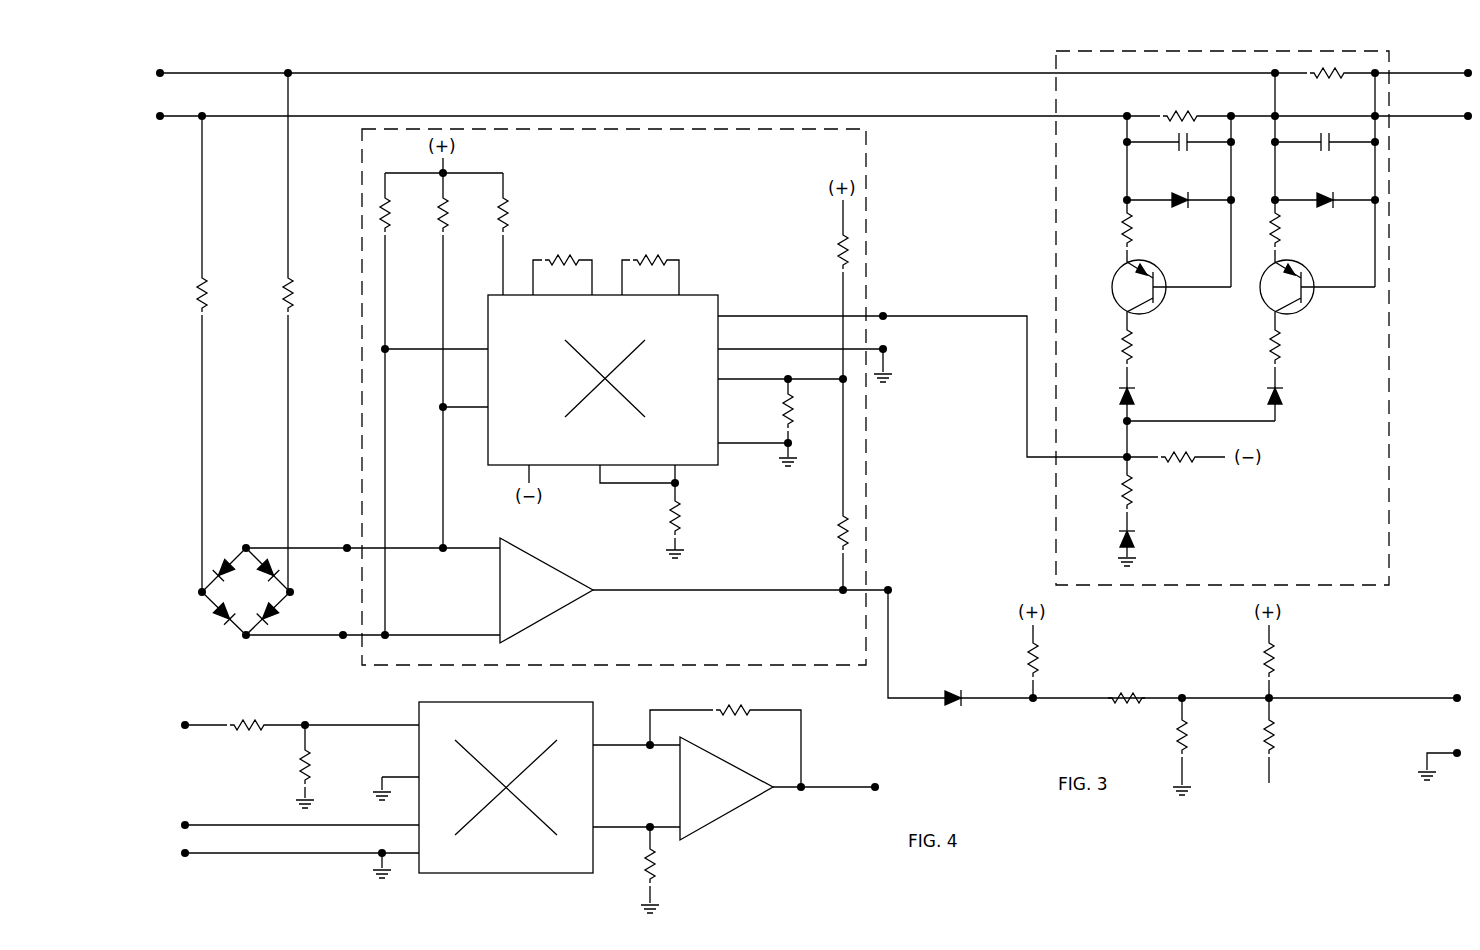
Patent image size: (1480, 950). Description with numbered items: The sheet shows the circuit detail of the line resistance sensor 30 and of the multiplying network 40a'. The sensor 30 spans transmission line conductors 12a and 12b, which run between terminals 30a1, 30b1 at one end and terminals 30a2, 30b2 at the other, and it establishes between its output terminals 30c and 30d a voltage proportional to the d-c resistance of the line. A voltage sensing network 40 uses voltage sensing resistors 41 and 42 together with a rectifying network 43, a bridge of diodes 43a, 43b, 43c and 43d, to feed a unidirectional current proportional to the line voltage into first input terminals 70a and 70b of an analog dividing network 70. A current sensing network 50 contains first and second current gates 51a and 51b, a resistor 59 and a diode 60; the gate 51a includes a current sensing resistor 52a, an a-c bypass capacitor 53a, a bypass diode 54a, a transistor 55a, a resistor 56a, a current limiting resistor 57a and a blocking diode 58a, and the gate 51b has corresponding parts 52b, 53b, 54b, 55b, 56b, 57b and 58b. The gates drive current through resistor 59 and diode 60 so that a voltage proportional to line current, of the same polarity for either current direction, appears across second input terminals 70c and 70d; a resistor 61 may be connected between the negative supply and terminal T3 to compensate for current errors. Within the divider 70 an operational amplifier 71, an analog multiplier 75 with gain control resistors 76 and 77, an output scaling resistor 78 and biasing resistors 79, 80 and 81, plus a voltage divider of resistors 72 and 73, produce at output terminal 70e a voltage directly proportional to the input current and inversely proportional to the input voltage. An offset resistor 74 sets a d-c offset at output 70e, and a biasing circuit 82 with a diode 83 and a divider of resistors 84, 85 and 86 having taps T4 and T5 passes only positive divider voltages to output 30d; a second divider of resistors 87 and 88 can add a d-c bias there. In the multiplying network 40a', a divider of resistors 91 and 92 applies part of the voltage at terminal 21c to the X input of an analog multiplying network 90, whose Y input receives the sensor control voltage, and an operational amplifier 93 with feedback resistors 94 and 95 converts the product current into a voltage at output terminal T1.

In FIG. 3, the conductor 12a is at (465, 75).
In FIG. 3, the conductor 12b is at (470, 113).
In FIG. 3, the terminal 30a1 is at (166, 73).
In FIG. 3, the terminal 30b1 is at (166, 116).
In FIG. 3, the terminal 30a2 is at (1465, 72).
In FIG. 3, the terminal 30b2 is at (1465, 114).
In FIG. 3, the line resistance sensor 30 is at (338, 175).
In FIG. 3, the voltage sensing network 40 is at (307, 268).
In FIG. 3, the voltage sensing resistor 41 is at (293, 305).
In FIG. 3, the voltage sensing resistor 42 is at (207, 305).
In FIG. 3, the rectifying network 43 is at (251, 554).
In FIG. 3, the diode 43a is at (220, 552).
In FIG. 3, the diode 43b is at (215, 620).
In FIG. 3, the diode 43c is at (272, 600).
In FIG. 3, the diode 43d is at (268, 596).
In FIG. 3, the analog dividing network 70 is at (868, 160).
In FIG. 3, the first input terminal 70a is at (346, 544).
In FIG. 3, the first input terminal 70b is at (340, 640).
In FIG. 3, the second input terminal 70c is at (887, 312).
In FIG. 3, the second input terminal 70d is at (890, 352).
In FIG. 3, the output terminal 70e is at (893, 588).
In FIG. 3, the operational amplifier 71 is at (560, 567).
In FIG. 3, the resistor 72 is at (838, 530).
In FIG. 3, the resistor 73 is at (793, 414).
In FIG. 3, the offset resistor 74 is at (838, 250).
In FIG. 3, the analog multiplier 75 is at (700, 294).
In FIG. 3, the gain control resistor 76 is at (556, 256).
In FIG. 3, the gain control resistor 77 is at (644, 256).
In FIG. 3, the output scaling resistor 78 is at (680, 520).
In FIG. 3, the biasing resistor 79 is at (508, 200).
In FIG. 3, the biasing resistor 80 is at (448, 200).
In FIG. 3, the biasing resistor 81 is at (390, 200).
In FIG. 3, the current sensing network 50 is at (1054, 175).
In FIG. 3, the first current gate 51a is at (1337, 405).
In FIG. 3, the second current gate 51b is at (1112, 365).
In FIG. 3, the current sensing resistor 52a is at (1335, 80).
In FIG. 3, the current sensing resistor 52b is at (1180, 110).
In FIG. 3, the a-c bypass capacitor 53a is at (1328, 151).
In FIG. 3, the a-c bypass capacitor 53b is at (1181, 151).
In FIG. 3, the bypass diode 54a is at (1325, 208).
In FIG. 3, the bypass diode 54b is at (1183, 208).
In FIG. 3, the transistor 55a is at (1304, 298).
In FIG. 3, the transistor 55b is at (1160, 280).
In FIG. 3, the resistor 56a is at (1281, 236).
In FIG. 3, the resistor 56b is at (1120, 232).
In FIG. 3, the current limiting resistor 57a is at (1281, 350).
In FIG. 3, the current limiting resistor 57b is at (1132, 336).
In FIG. 3, the blocking diode 58a is at (1282, 394).
In FIG. 3, the blocking diode 58b is at (1133, 392).
In FIG. 3, the resistor 59 is at (1120, 500).
In FIG. 3, the diode 60 is at (1135, 537).
In FIG. 3, the resistor 61 is at (1180, 466).
In FIG. 3, the terminal T3 is at (1123, 455).
In FIG. 3, the biasing circuit 82 is at (1300, 660).
In FIG. 3, the diode 83 is at (946, 690).
In FIG. 3, the resistor 84 is at (1027, 660).
In FIG. 3, the resistor 85 is at (1112, 690).
In FIG. 3, the resistor 86 is at (1176, 740).
In FIG. 3, the resistor 87 is at (1263, 740).
In FIG. 3, the resistor 88 is at (1263, 664).
In FIG. 3, the first tap T4 is at (1038, 695).
In FIG. 3, the second tap T5 is at (1185, 692).
In FIG. 3, the sensor output terminal 30c is at (1453, 750).
In FIG. 4, the sensor output terminal 30c is at (190, 858).
In FIG. 3, the sensor output terminal 30d is at (1453, 694).
In FIG. 4, the sensor output terminal 30d is at (190, 820).
In FIG. 4, the terminal 21c is at (190, 730).
In FIG. 4, the analog multiplying network 90 is at (562, 875).
In FIG. 4, the resistor 91 is at (240, 718).
In FIG. 4, the resistor 92 is at (311, 767).
In FIG. 4, the operational amplifier 93 is at (750, 805).
In FIG. 4, the feedback resistor 94 is at (736, 718).
In FIG. 4, the feedback resistor 95 is at (656, 864).
In FIG. 4, the output terminal T1 is at (872, 780).
In FIG. 4, the multiplying network 40a' is at (799, 875).